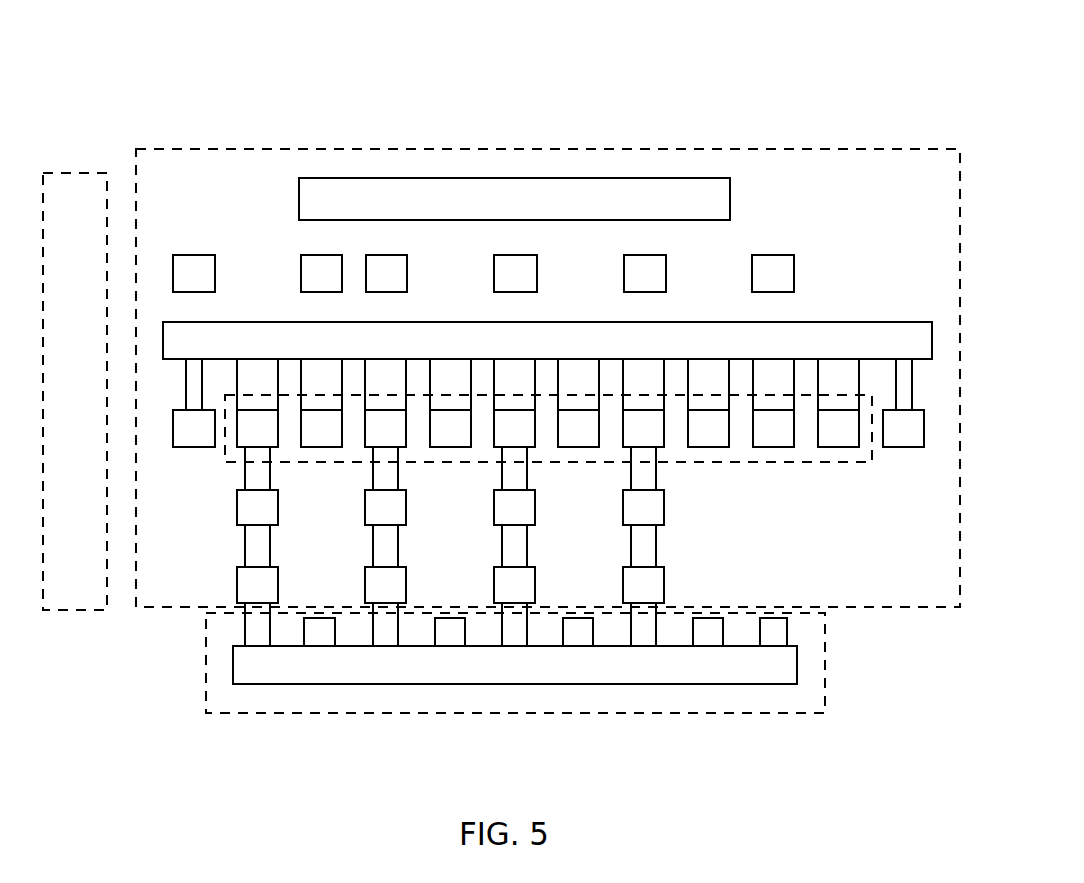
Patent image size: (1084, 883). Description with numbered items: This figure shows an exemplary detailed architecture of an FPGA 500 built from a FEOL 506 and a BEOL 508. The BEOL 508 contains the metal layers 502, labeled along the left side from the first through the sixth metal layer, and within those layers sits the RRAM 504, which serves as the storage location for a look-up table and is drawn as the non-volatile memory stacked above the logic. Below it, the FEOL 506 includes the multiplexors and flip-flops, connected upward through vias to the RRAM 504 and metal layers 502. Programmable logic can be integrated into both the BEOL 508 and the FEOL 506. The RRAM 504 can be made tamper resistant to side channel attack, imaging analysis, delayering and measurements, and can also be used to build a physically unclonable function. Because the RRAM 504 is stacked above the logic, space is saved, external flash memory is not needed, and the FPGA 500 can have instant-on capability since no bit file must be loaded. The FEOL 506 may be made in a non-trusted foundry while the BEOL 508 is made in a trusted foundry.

The FPGA 500 is at (809, 58).
The metal layers 502 is at (75, 173).
The RRAM 504 is at (835, 462).
The FEOL 506 is at (825, 662).
The BEOL 508 is at (935, 148).